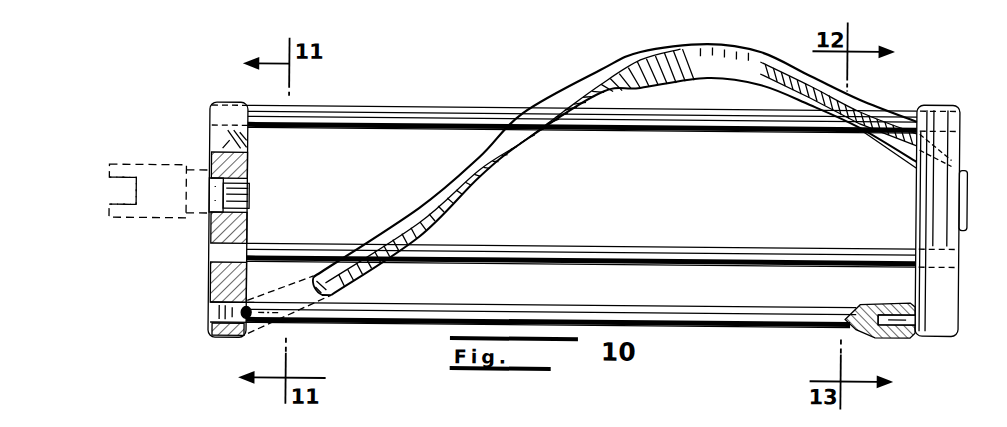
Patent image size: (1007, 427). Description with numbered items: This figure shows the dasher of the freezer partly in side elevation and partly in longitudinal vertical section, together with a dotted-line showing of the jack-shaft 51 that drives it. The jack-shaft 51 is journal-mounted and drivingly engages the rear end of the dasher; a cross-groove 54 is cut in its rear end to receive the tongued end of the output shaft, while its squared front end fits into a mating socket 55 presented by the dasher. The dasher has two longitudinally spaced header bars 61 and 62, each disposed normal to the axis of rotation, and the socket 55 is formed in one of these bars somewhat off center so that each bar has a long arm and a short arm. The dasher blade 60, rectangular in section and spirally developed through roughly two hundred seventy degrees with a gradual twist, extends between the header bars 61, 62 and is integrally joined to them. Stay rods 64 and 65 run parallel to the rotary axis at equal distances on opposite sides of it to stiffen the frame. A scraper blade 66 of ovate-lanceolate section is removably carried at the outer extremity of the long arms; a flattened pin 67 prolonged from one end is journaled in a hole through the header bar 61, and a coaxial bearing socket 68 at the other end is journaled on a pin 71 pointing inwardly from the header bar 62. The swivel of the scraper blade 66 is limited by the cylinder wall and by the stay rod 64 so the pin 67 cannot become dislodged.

The jack-shaft 51 is at (162, 222).
The cross-groove 54 is at (112, 197).
The socket 55 is at (251, 190).
The dasher blade 60 is at (645, 50).
The header bar 61 is at (249, 140).
The header bar 62 is at (961, 142).
The stay rod 64 is at (630, 249).
The stay rod 65 is at (468, 105).
The scraper blade 66 is at (733, 308).
The pin 67 is at (212, 312).
The bearing socket 68 is at (909, 332).
The pin 71 is at (884, 298).